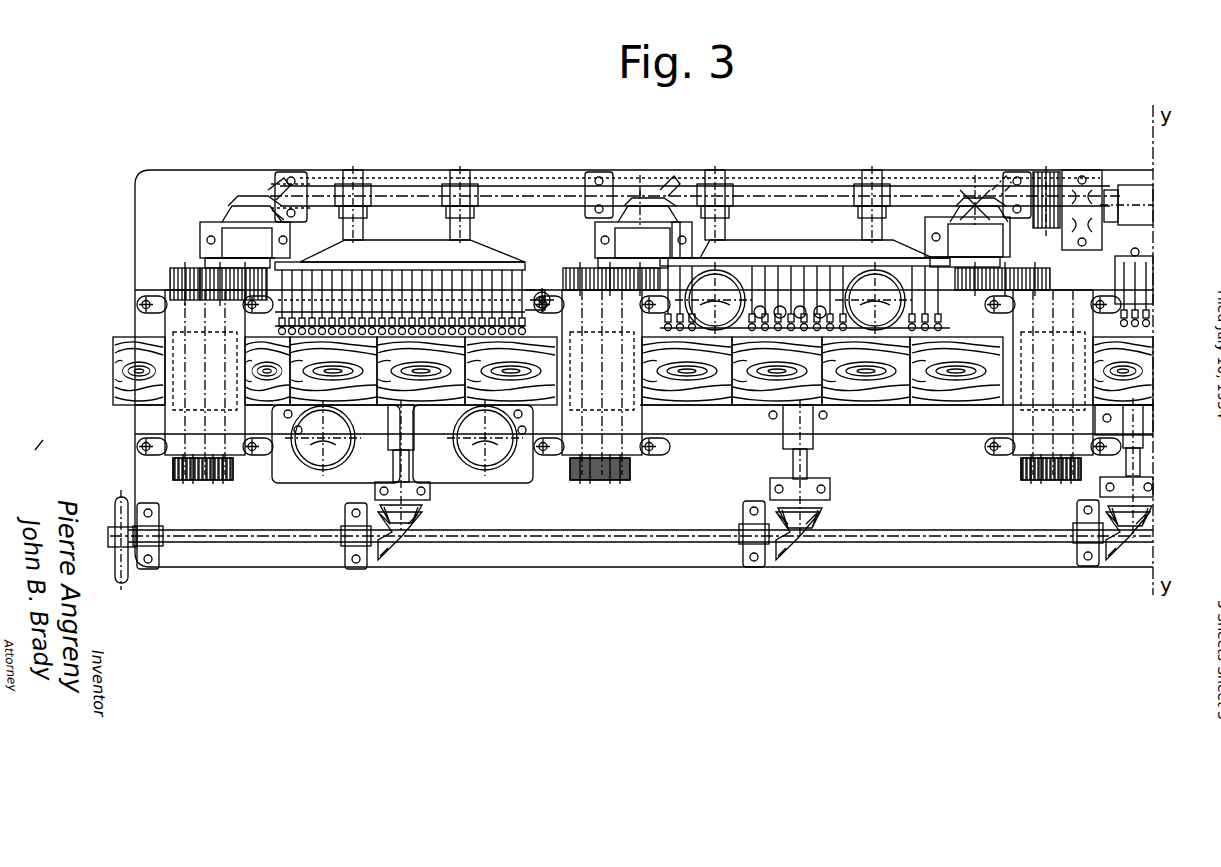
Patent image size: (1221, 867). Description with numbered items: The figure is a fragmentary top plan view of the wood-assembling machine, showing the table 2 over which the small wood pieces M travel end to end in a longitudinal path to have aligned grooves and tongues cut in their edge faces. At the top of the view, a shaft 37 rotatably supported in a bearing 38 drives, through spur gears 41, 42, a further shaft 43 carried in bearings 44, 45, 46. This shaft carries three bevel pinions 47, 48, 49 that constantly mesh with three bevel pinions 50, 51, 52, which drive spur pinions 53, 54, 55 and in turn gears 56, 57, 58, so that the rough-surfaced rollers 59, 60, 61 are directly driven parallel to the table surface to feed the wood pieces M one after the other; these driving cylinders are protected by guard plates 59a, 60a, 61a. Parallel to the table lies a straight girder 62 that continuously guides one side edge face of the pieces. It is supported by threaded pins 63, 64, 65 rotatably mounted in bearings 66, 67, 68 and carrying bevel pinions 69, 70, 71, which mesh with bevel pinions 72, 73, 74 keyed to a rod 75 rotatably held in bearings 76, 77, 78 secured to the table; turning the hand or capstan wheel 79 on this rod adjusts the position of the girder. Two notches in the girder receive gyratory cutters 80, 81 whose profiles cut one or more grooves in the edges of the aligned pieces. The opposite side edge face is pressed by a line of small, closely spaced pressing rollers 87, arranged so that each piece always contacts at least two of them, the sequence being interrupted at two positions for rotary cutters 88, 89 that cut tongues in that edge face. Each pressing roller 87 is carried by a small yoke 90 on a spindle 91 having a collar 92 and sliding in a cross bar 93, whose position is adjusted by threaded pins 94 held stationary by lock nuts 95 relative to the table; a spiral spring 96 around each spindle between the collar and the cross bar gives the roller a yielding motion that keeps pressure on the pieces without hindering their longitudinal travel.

The table 2 is at (125, 170).
The shaft 37 is at (1126, 185).
The bearing 38 is at (1091, 190).
The spur gear 41 is at (1050, 172).
The spur gear 42 is at (1036, 172).
The shaft 43 is at (813, 180).
The bearing 44 is at (320, 170).
The bearing 45 is at (605, 190).
The bearing 46 is at (1015, 190).
The bevel pinion 47 is at (990, 218).
The bevel pinion 48 is at (675, 235).
The bevel pinion 49 is at (266, 220).
The bevel pinion 50 is at (965, 200).
The bevel pinion 51 is at (640, 215).
The bevel pinion 52 is at (240, 240).
The spur pinion 53 is at (950, 258).
The spur pinion 54 is at (700, 173).
The spur pinion 55 is at (285, 255).
The gear 56 is at (1055, 275).
The gear 57 is at (580, 265).
The gear 58 is at (177, 266).
The roller 59 is at (1087, 333).
The guard plate 59a is at (1017, 340).
The roller 60 is at (610, 340).
The guard plate 60a is at (580, 460).
The roller 61 is at (225, 330).
The guard plate 61a is at (150, 450).
The girder 62 is at (698, 430).
The threaded pin 63 is at (395, 455).
The threaded pin 64 is at (805, 463).
The threaded pin 65 is at (1135, 460).
The bearing 66 is at (430, 495).
The bearing 67 is at (830, 490).
The bearing 68 is at (1155, 487).
The bevel pinion 69 is at (424, 517).
The bevel pinion 70 is at (810, 520).
The bevel pinion 71 is at (1140, 520).
The bevel pinion 72 is at (390, 555).
The bevel pinion 73 is at (782, 562).
The bevel pinion 74 is at (1113, 550).
The rod 75 is at (278, 543).
The bearing 76 is at (357, 570).
The bearing 77 is at (752, 568).
The bearing 78 is at (1090, 568).
The hand or capstan wheel 79 is at (118, 580).
The gyratory cutter 80 is at (328, 445).
The gyratory cutter 81 is at (490, 455).
The pressing roller 87 is at (408, 260).
The rotary cutter 88 is at (738, 280).
The rotary cutter 89 is at (858, 275).
The yoke 90 is at (255, 282).
The spindle 91 is at (462, 265).
The collar 92 is at (523, 265).
The cross bar 93 is at (430, 265).
The threaded pin 94 is at (350, 180).
The lock nut 95 is at (330, 230).
The spiral spring 96 is at (375, 260).
The wood pieces M is at (118, 380).